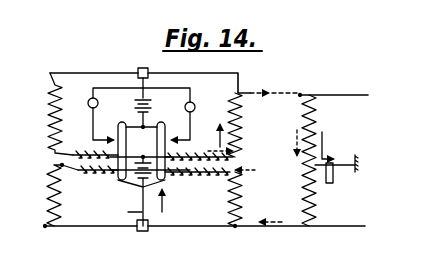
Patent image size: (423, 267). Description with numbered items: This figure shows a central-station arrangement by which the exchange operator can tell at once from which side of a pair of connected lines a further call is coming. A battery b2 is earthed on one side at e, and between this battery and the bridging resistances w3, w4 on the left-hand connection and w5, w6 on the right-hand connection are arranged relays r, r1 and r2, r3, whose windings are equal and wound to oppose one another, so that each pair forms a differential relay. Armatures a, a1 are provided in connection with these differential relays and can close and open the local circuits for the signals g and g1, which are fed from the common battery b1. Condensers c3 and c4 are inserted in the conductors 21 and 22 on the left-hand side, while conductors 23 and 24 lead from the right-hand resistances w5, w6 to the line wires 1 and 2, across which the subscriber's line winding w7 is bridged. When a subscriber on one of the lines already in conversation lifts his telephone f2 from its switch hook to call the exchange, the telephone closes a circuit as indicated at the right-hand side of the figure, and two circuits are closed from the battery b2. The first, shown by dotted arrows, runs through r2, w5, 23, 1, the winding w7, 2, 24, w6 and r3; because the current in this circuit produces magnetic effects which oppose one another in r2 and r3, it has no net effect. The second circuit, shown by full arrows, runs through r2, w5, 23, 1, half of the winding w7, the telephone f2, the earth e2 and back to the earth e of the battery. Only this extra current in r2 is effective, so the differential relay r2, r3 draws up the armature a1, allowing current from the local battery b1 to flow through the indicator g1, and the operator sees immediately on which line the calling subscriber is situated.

The line wire 1 is at (332, 87).
The line wire 2 is at (306, 235).
The conductor 21 is at (86, 84).
The conductor 22 is at (72, 235).
The conductor 23 is at (200, 87).
The conductor 24 is at (217, 235).
The condenser c3 is at (150, 83).
The condenser c4 is at (148, 234).
The common battery b1 is at (150, 113).
The battery b2 is at (125, 191).
The signal g is at (84, 106).
The signal g1 is at (198, 109).
The armature a is at (103, 124).
The armature a1 is at (180, 126).
The relay winding r is at (95, 148).
The relay winding r1 is at (98, 177).
The relay winding r2 is at (199, 148).
The relay winding r3 is at (197, 179).
The bridging resistance w3 is at (48, 118).
The bridging resistance w4 is at (48, 178).
The bridging resistance w5 is at (240, 118).
The bridging resistance w6 is at (240, 178).
The resistance w7 is at (302, 183).
The earth e is at (129, 212).
The earth e2 is at (336, 159).
The telephone f2 is at (326, 167).